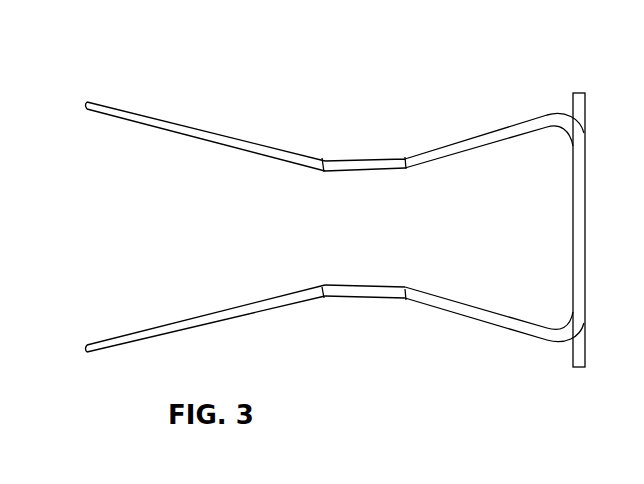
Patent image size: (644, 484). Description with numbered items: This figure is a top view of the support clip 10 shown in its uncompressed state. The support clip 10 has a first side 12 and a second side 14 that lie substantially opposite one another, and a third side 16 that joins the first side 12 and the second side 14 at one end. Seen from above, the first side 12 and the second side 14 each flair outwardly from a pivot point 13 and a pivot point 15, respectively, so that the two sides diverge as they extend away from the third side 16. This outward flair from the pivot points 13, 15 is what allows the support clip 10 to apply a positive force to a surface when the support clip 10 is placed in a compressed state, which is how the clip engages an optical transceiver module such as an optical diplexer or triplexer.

The support clip 10 is at (465, 92).
The first side 12 is at (180, 321).
The pivot point 13 is at (350, 283).
The second side 14 is at (208, 131).
The pivot point 15 is at (340, 162).
The third side 16 is at (587, 212).